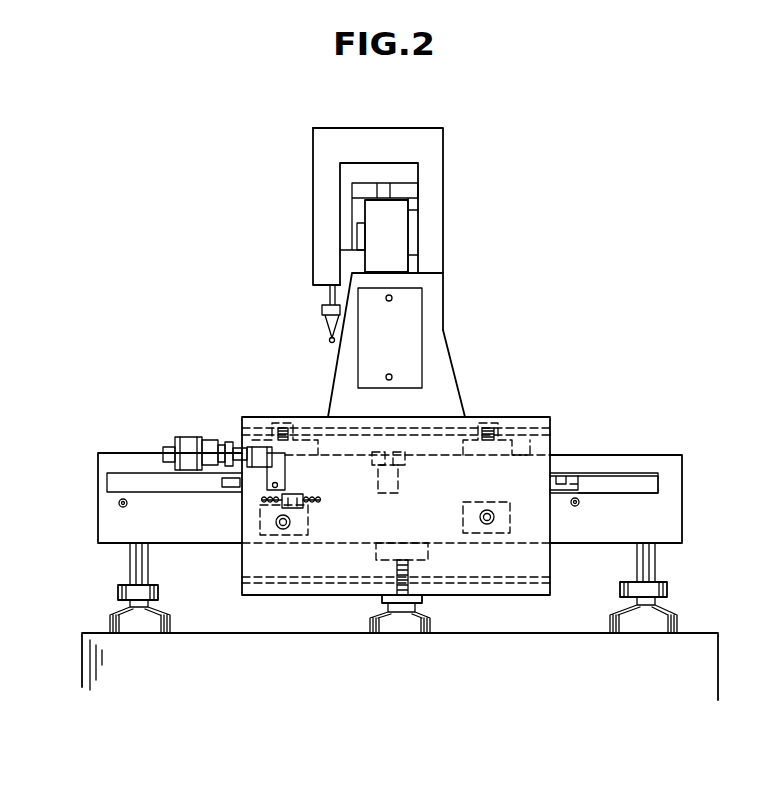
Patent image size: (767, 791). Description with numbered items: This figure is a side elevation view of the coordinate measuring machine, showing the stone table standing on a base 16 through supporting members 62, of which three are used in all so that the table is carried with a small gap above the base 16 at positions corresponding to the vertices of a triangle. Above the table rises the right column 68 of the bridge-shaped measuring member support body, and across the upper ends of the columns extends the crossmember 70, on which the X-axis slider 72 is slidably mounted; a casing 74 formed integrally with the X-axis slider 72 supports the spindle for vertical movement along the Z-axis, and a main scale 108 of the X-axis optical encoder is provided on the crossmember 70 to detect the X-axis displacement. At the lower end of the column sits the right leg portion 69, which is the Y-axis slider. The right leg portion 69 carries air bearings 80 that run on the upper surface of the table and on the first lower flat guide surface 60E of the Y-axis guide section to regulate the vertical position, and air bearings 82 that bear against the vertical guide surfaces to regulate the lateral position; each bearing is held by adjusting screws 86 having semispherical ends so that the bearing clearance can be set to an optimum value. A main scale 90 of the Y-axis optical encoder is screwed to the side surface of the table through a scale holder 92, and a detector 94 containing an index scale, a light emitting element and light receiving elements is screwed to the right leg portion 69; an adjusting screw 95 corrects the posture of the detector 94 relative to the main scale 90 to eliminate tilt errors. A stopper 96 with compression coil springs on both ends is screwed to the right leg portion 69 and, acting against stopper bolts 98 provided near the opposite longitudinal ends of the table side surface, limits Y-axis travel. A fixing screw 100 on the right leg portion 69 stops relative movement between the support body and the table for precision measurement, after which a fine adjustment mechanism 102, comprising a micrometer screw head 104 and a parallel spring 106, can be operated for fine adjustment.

The base 16 is at (720, 650).
The first lower flat guide surface 60E is at (165, 543).
The supporting members 62 is at (118, 593).
The right column 68 is at (443, 330).
The right leg portion 69 is at (538, 412).
The crossmember 70 is at (410, 228).
The X-axis slider 72 is at (431, 160).
The casing 74 is at (317, 128).
The air bearings 80 is at (306, 422).
The air bearings 82 is at (262, 524).
The adjusting screws 86 is at (283, 422).
The main scale 90 is at (222, 486).
The scale holder 92 is at (582, 472).
The detector 94 is at (402, 488).
The adjusting screw 95 is at (403, 450).
The stopper 96 is at (300, 502).
The stopper bolts 98 is at (115, 505).
The fixing screw 100 is at (268, 487).
The fine adjustment mechanism 102 is at (224, 429).
The micrometer screw head 104 is at (178, 437).
The parallel spring 106 is at (260, 440).
The main scale 108 is at (360, 237).